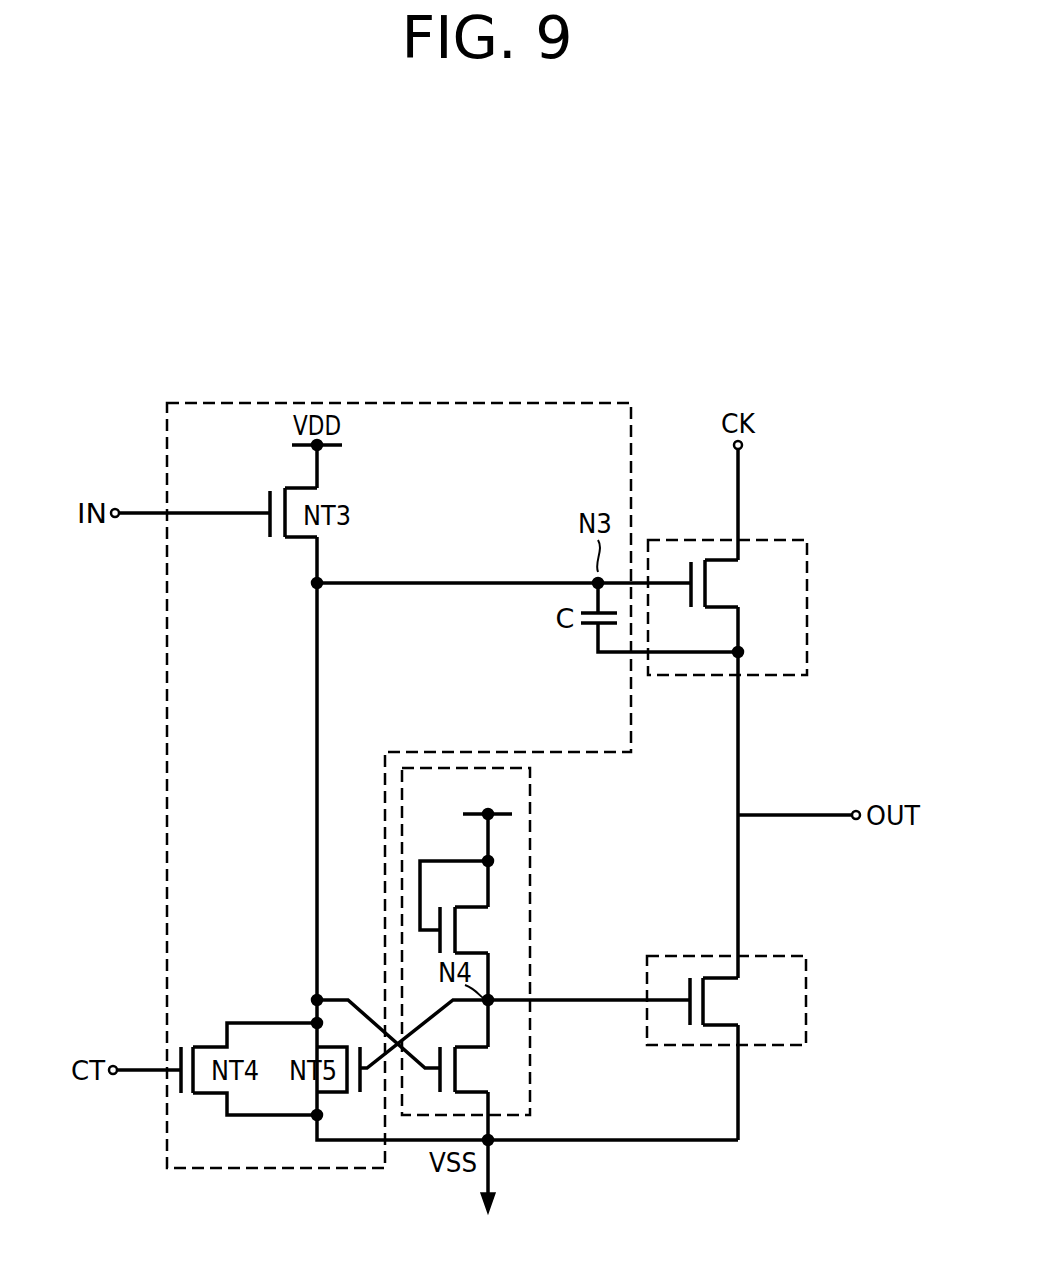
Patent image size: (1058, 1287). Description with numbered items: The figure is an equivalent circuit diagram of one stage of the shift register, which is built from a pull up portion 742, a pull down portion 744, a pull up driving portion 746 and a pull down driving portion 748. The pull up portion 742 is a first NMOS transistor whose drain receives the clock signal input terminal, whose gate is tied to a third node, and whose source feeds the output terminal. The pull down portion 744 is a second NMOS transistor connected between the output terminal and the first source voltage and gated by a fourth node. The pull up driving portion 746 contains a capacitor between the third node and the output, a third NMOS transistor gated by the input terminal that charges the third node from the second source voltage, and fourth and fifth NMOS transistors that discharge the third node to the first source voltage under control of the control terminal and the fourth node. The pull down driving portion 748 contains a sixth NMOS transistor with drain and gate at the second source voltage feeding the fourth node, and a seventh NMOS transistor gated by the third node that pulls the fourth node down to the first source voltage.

The pull up portion 742 is at (807, 600).
The pull down portion 744 is at (806, 998).
The pull up driving portion 746 is at (458, 402).
The pull down driving portion 748 is at (530, 838).